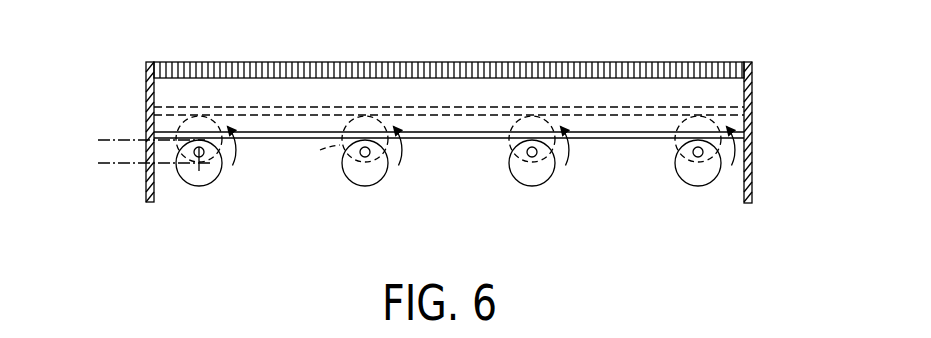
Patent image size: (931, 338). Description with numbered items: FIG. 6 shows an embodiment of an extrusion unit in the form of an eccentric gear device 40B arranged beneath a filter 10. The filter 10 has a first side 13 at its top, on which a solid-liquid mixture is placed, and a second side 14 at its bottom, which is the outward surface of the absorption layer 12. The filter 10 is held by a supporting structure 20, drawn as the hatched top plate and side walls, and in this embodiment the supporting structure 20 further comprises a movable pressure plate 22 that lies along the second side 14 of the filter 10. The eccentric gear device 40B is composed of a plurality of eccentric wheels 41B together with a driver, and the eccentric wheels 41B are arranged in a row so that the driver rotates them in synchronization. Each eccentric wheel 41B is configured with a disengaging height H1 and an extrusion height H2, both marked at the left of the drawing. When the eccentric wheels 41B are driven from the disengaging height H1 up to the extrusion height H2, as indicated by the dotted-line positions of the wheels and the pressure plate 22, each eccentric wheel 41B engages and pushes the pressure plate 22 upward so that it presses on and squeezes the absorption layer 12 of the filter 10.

The filter 10 is at (476, 122).
The absorption layer 12 is at (479, 88).
The first side 13 is at (262, 62).
The second side 14 is at (620, 139).
The supporting structure 20 is at (757, 168).
The pressure plate 22 is at (458, 110).
The eccentric gear device 40B is at (325, 195).
The eccentric wheel 41B is at (199, 116).
The disengaging height H1 is at (136, 162).
The extrusion height H2 is at (133, 139).